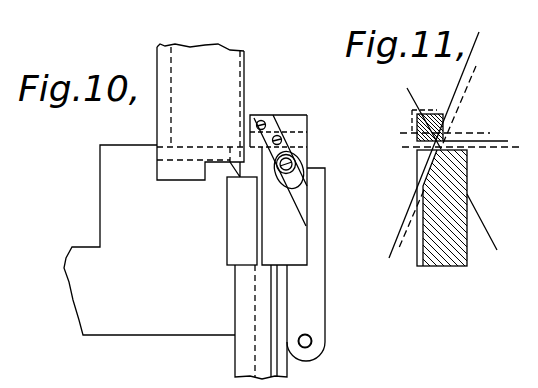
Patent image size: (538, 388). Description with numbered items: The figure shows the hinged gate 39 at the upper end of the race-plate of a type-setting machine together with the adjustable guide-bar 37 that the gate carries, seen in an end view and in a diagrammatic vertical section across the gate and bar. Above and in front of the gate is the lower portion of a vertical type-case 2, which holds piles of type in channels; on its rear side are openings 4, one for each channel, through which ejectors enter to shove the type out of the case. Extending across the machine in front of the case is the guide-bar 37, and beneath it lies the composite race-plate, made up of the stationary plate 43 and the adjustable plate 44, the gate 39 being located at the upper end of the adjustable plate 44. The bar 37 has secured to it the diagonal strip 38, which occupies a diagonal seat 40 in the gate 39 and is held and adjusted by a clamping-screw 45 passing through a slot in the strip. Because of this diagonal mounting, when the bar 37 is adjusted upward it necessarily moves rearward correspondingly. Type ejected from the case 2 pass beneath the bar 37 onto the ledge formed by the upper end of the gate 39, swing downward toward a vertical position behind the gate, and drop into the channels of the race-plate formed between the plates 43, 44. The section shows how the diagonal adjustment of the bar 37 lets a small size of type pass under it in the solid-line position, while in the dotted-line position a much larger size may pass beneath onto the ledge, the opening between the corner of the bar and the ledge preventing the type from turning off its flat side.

In FIG. 10, the type-case 2 is at (200, 112).
In FIG. 10, the opening 4 is at (165, 141).
In FIG. 10, the guide-bar 37 is at (300, 114).
In FIG. 11, the guide-bar 37 is at (417, 123).
In FIG. 10, the diagonal strip 38 is at (284, 143).
In FIG. 10, the gate 39 is at (280, 190).
In FIG. 11, the gate 39 is at (467, 168).
In FIG. 11, the diagonal seat 40 is at (472, 169).
In FIG. 10, the stationary plate 43 is at (261, 322).
In FIG. 10, the adjustable plate 44 is at (282, 307).
In FIG. 10, the clamping-screw 45 is at (295, 166).